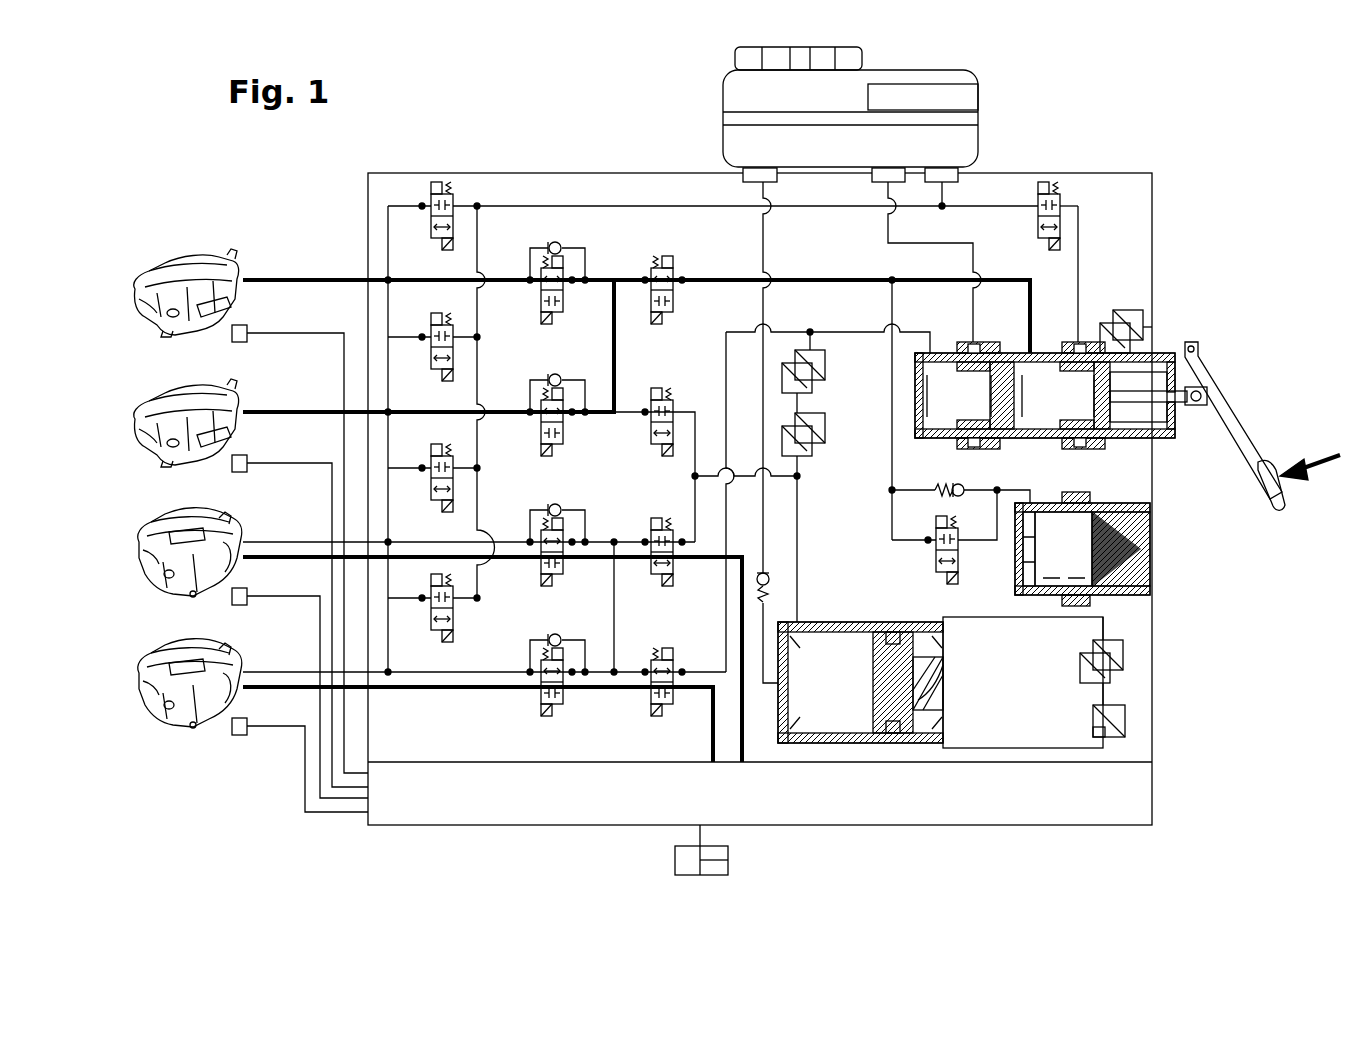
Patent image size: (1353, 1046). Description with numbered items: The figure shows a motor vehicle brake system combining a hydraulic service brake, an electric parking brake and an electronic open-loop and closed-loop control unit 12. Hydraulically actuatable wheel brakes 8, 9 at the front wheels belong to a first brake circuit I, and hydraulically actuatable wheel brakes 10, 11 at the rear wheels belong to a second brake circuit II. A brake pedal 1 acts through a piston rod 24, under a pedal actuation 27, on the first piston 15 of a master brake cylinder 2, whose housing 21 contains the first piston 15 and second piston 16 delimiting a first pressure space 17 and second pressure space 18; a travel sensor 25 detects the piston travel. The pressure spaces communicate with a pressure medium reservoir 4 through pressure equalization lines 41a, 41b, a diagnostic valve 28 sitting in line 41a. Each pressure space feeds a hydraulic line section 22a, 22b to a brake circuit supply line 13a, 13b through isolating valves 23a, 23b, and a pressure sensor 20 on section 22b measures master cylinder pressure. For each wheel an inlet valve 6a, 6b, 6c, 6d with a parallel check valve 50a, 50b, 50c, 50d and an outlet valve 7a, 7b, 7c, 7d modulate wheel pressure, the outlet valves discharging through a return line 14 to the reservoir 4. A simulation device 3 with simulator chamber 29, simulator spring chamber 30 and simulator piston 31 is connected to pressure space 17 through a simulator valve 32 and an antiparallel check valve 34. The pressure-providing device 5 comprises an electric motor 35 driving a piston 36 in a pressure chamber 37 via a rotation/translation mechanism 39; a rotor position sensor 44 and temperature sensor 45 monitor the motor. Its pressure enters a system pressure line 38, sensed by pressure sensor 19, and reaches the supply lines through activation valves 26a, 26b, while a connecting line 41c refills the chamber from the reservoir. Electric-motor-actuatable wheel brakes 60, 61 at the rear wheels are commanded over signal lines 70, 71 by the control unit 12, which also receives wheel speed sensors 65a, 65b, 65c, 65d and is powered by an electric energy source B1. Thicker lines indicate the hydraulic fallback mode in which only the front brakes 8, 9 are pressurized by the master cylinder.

The brake pedal 1 is at (1236, 445).
The master brake cylinder 2 is at (905, 388).
The simulation device 3 is at (1102, 535).
The pressure medium reservoir 4 is at (733, 92).
The pressure-providing device 5 is at (996, 692).
The inlet valve 6a is at (564, 312).
The inlet valve 6b is at (564, 444).
The inlet valve 6c is at (564, 574).
The inlet valve 6d is at (540, 702).
The outlet valve 7a is at (430, 212).
The outlet valve 7b is at (430, 343).
The outlet valve 7c is at (430, 474).
The outlet valve 7d is at (430, 604).
The wheel brake 8 is at (232, 312).
The wheel brake 9 is at (232, 443).
The wheel brake 10 is at (221, 531).
The wheel brake 11 is at (221, 661).
The electronic open-loop and closed-loop control unit 12 is at (1135, 800).
The brake circuit supply line 13a is at (618, 318).
The brake circuit supply line 13b is at (618, 570).
The return line 14 is at (558, 205).
The first master brake cylinder piston 15 is at (1113, 440).
The second master brake cylinder piston 16 is at (1006, 438).
The first pressure space 17 is at (1043, 372).
The second pressure space 18 is at (942, 372).
The pressure sensor 19 is at (825, 445).
The pressure sensor 20 is at (800, 348).
The housing 21 is at (1133, 290).
The hydraulic line section 22a is at (890, 276).
The hydraulic line section 22b is at (888, 328).
The isolating valve 23a is at (676, 294).
The isolating valve 23b is at (648, 700).
The piston rod 24 is at (1204, 376).
The travel sensor 25 is at (1152, 327).
The activation valve 26a is at (676, 406).
The activation valve 26b is at (676, 574).
The pedal actuation 27 is at (1314, 472).
The diagnostic valve 28 is at (1040, 200).
The simulator chamber 29 is at (1022, 568).
The simulator spring chamber 30 is at (1120, 580).
The simulator piston 31 is at (1050, 530).
The simulator valve 32 is at (935, 552).
The check valve 34 is at (946, 486).
The electric motor 35 is at (1048, 745).
The piston 36 is at (888, 735).
The pressure chamber 37 is at (828, 655).
The system pressure line 38 is at (760, 476).
The rotation/translation mechanism 39 is at (922, 712).
The pressure equalization line 41a is at (1082, 310).
The pressure equalization line 41b is at (886, 232).
The connecting line 41c is at (760, 248).
The rotor position sensor 44 is at (1123, 657).
The temperature sensor 45 is at (1125, 720).
The check valve 50a is at (550, 246).
The check valve 50b is at (550, 378).
The check valve 50c is at (550, 508).
The check valve 50d is at (550, 638).
The electric-motor-actuatable wheel brake 60 is at (222, 512).
The electric-motor-actuatable wheel brake 61 is at (222, 642).
The wheel speed sensor 65a is at (242, 342).
The wheel speed sensor 65b is at (242, 472).
The wheel speed sensor 65c is at (242, 605).
The wheel speed sensor 65d is at (242, 735).
The electric signal line 70 is at (386, 540).
The electric signal line 71 is at (432, 690).
The electric energy source B1 is at (675, 860).
The first brake circuit I is at (612, 272).
The second brake circuit II is at (612, 534).